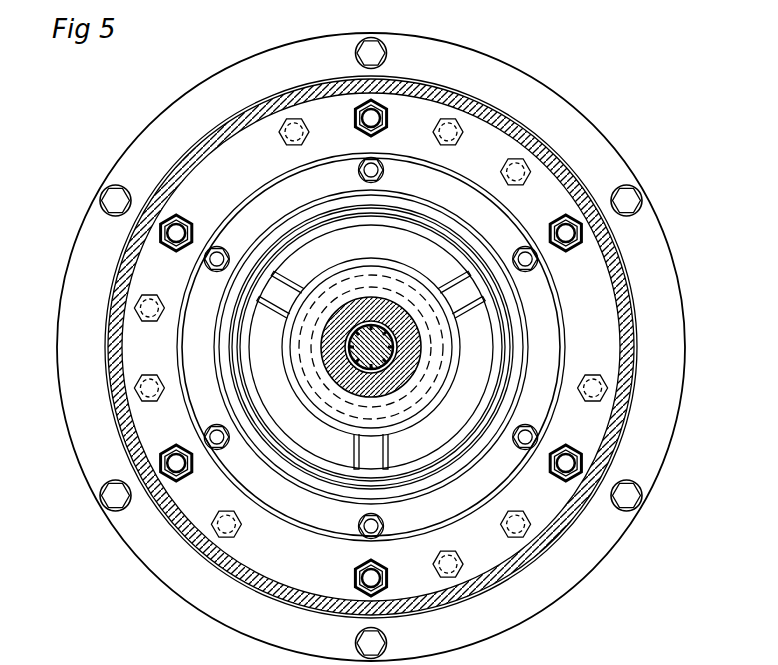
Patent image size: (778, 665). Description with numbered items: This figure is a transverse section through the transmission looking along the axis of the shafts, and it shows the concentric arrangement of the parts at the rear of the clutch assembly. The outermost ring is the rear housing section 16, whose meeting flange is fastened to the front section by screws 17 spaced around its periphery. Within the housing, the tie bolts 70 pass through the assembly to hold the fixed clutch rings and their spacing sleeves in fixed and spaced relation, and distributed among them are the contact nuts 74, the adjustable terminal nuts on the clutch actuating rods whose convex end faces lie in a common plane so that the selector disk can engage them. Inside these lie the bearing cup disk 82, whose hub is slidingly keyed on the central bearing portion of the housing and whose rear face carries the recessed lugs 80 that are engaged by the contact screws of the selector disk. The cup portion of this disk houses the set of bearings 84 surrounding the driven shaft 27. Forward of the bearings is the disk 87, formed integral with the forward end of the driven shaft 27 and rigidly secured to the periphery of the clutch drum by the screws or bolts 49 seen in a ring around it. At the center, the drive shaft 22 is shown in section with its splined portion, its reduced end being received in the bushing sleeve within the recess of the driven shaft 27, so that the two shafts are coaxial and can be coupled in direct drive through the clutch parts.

The rear housing section 16 is at (118, 405).
The screws 17 is at (632, 200).
The drive shaft 22 is at (383, 305).
The driven shaft 27 is at (348, 312).
The screws or bolts 49 is at (226, 250).
The tie bolts 70 is at (377, 111).
The contact nuts 74 is at (520, 159).
The recessed lugs 80 is at (458, 270).
The bearing cup disk 82 is at (415, 268).
The bearings 84 is at (513, 349).
The disk 87 is at (528, 361).